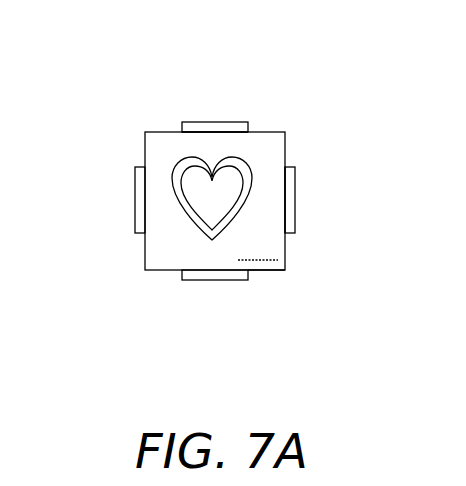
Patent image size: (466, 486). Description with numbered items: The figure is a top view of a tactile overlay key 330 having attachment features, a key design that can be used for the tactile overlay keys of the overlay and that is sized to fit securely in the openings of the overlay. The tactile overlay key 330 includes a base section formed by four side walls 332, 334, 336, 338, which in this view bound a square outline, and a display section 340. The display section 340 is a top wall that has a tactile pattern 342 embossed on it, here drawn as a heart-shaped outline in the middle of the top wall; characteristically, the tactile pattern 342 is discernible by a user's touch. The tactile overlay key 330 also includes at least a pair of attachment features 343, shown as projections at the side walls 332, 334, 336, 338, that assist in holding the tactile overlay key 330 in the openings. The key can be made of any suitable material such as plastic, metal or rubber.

The tactile overlay key 330 is at (275, 56).
The side wall 332 is at (145, 252).
The side wall 334 is at (204, 130).
The side wall 336 is at (288, 193).
The side wall 338 is at (262, 270).
The display section 340 is at (259, 249).
The tactile pattern 342 is at (187, 164).
The attachment features 343 is at (217, 123).